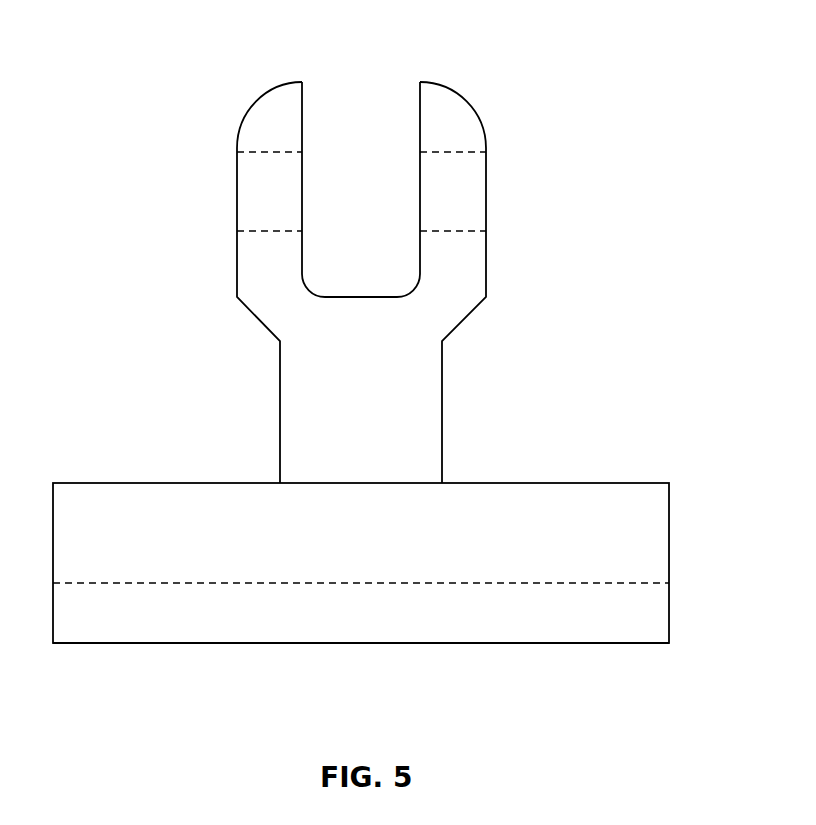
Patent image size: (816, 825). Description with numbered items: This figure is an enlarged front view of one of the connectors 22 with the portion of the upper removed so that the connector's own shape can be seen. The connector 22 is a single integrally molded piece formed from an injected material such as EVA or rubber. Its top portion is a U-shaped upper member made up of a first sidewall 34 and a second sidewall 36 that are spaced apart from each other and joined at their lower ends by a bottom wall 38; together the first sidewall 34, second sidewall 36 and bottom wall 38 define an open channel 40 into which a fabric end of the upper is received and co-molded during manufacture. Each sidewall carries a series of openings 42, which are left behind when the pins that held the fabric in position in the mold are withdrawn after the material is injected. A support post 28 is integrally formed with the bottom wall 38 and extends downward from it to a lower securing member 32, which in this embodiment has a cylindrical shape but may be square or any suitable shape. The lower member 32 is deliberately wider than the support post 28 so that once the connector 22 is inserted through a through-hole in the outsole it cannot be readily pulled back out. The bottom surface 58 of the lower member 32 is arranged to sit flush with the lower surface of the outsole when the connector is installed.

The connector 22 is at (535, 112).
The support post 28 is at (427, 402).
The lower securing member 32 is at (655, 549).
The first sidewall 34 is at (275, 105).
The second sidewall 36 is at (456, 105).
The bottom wall 38 is at (358, 316).
The open channel 40 is at (362, 128).
The openings 42 is at (236, 204).
The bottom surface 58 is at (333, 643).